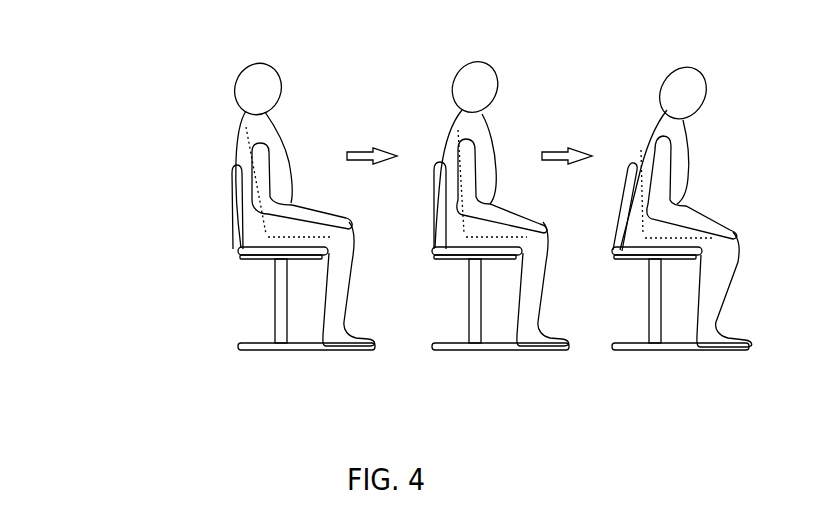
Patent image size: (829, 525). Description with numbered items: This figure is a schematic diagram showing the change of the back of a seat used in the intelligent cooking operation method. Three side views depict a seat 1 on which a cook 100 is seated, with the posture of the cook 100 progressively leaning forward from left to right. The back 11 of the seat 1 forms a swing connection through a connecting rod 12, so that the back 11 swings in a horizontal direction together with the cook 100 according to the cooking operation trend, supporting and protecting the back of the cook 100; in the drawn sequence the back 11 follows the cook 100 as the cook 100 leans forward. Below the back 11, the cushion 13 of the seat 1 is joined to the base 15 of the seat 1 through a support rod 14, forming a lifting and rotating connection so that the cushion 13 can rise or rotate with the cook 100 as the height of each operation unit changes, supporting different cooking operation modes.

The cook 100 is at (240, 127).
The seat 1 is at (208, 240).
The back 11 is at (233, 182).
The connecting rod 12 is at (237, 225).
The cushion 13 is at (250, 263).
The support rod 14 is at (283, 303).
The base 15 is at (237, 350).